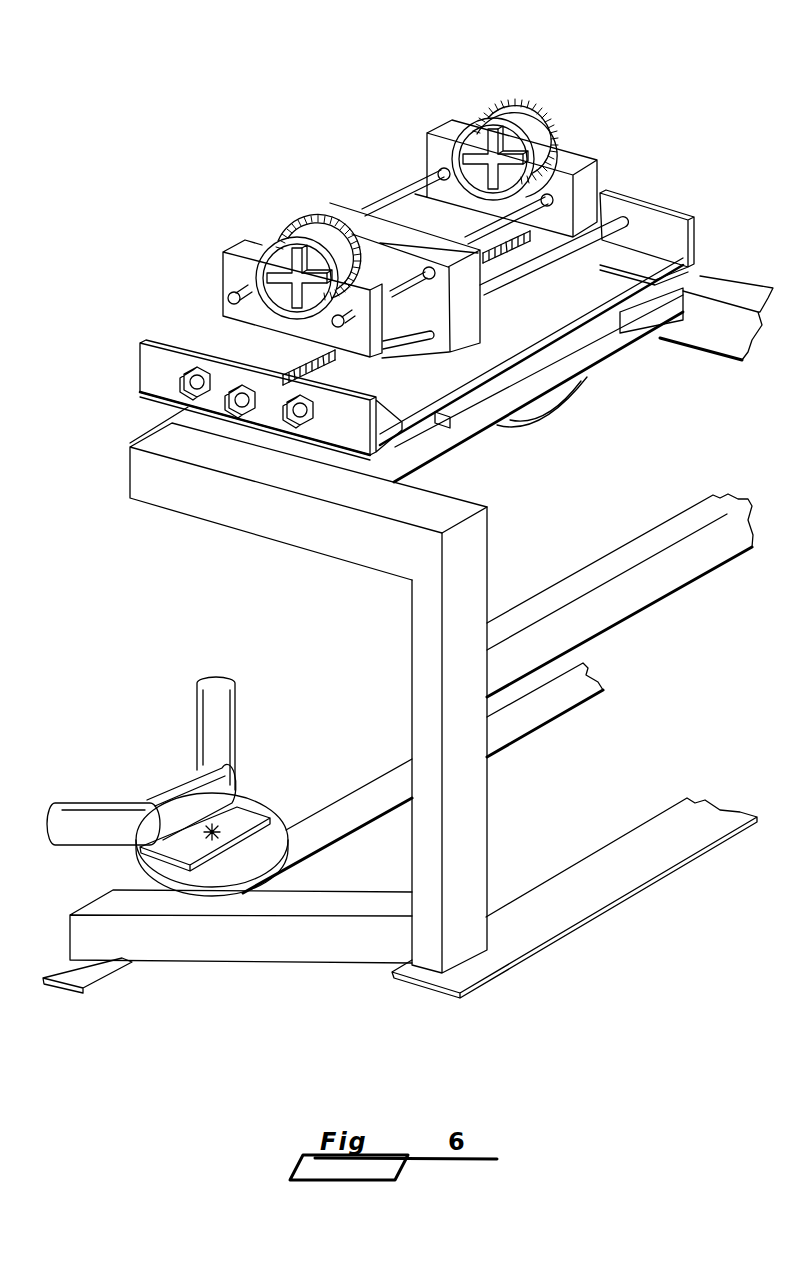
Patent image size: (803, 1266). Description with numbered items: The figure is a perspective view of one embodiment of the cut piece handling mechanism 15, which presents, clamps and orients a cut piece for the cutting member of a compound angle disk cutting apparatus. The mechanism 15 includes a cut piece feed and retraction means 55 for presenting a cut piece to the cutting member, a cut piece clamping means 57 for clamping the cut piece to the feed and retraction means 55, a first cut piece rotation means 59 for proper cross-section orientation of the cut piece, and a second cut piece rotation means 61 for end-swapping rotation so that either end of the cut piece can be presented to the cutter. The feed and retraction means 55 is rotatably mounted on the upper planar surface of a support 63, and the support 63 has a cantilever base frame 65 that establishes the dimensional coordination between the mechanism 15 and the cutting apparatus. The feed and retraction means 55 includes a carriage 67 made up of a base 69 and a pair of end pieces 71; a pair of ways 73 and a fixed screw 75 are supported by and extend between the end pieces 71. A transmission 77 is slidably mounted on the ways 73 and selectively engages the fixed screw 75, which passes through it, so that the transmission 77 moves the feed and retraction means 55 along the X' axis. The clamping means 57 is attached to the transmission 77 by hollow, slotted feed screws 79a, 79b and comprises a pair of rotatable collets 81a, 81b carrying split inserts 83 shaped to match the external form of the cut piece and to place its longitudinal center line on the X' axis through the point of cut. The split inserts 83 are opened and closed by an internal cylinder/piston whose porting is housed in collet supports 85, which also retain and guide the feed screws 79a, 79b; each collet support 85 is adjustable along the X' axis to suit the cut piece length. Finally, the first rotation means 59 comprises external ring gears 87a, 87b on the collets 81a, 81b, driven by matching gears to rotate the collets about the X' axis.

The cut piece handling mechanism 15 is at (423, 110).
The cut piece feed and retraction means 55 is at (565, 410).
The cut piece clamping means 57 is at (411, 243).
The first cut piece rotation means 59 is at (536, 132).
The second cut piece rotation means 61 is at (480, 440).
The support 63 is at (217, 508).
The cantilever base frame 65 is at (470, 815).
The carriage 67 is at (408, 318).
The base 69 is at (570, 315).
The end pieces 71 is at (675, 248).
The ways 73 is at (612, 215).
The fixed screw 75 is at (510, 257).
The transmission 77 is at (458, 345).
The hollow slotted feed screw 79a is at (580, 195).
The hollow slotted feed screw 79b is at (417, 185).
The rotatable collet 81a is at (533, 118).
The rotatable collet 81b is at (290, 233).
The split inserts 83 is at (277, 252).
The collet supports 85 is at (235, 272).
The external ring gear 87a is at (510, 107).
The external ring gear 87b is at (323, 218).